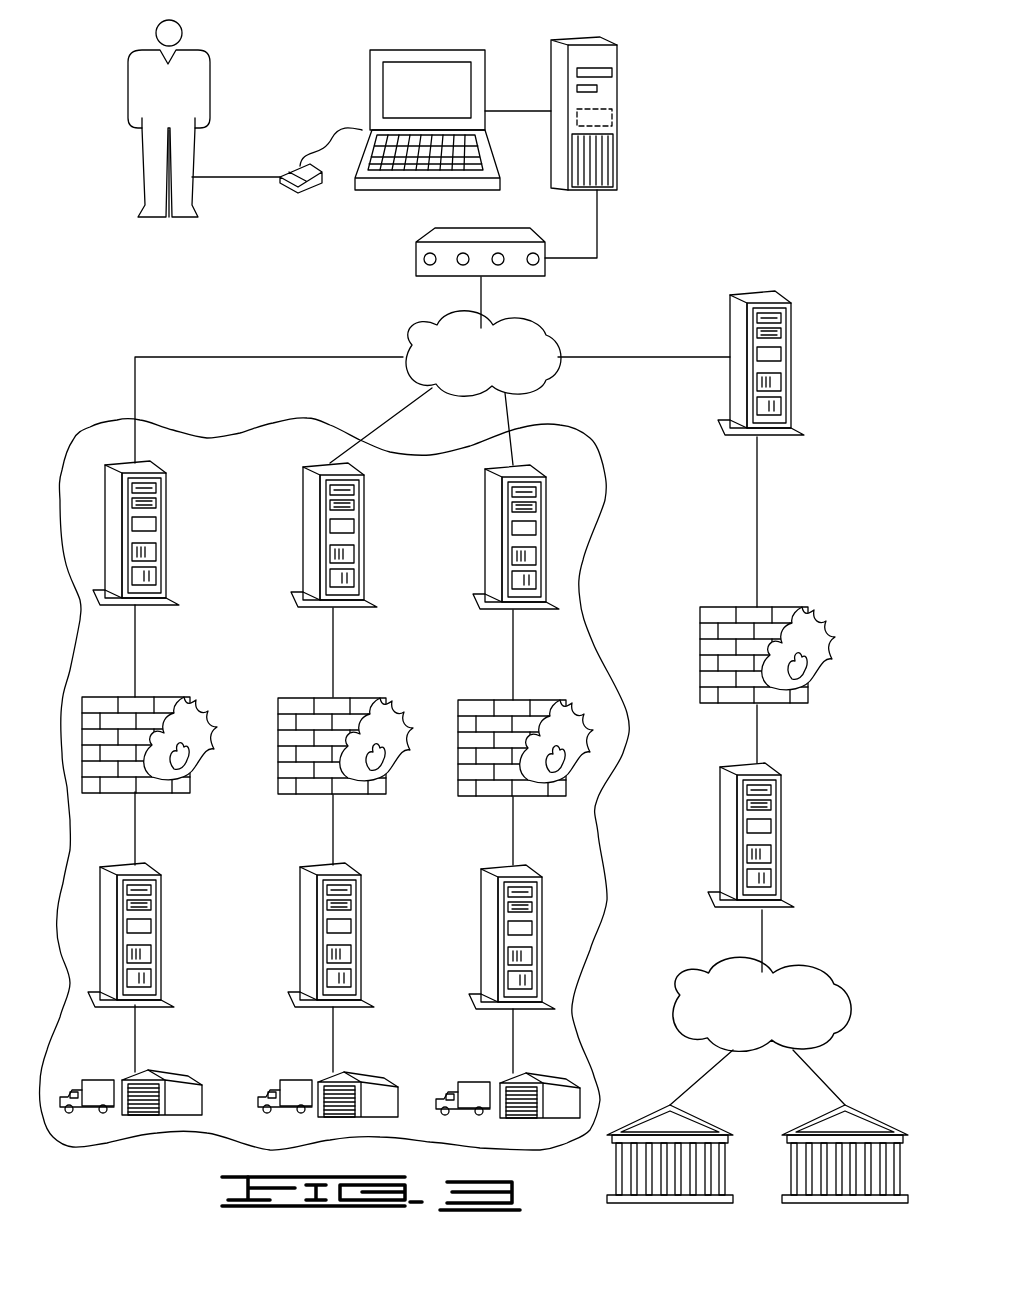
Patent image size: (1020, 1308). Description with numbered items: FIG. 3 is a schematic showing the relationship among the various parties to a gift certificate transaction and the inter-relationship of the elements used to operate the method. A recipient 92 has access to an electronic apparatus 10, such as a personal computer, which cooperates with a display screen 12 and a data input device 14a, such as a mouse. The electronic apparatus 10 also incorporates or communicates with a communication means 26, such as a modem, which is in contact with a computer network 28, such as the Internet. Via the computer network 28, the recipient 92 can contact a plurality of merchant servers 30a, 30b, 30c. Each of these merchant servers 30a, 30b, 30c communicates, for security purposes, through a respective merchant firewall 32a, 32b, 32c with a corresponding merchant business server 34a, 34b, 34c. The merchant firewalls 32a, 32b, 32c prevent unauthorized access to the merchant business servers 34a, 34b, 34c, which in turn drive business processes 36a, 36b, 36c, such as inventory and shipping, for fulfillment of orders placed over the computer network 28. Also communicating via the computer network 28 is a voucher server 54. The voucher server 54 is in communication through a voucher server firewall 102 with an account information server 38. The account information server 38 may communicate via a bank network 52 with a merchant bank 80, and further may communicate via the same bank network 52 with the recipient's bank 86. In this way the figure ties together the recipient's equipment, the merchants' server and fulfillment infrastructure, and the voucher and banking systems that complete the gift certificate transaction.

The electronic apparatus 10 is at (620, 90).
The display screen 12 is at (370, 82).
The data input device 14a is at (298, 165).
The communication means 26 is at (432, 232).
The computer network 28 is at (547, 330).
The voucher server 54 is at (795, 312).
The merchant server 30a is at (168, 560).
The merchant server 30b is at (304, 500).
The merchant server 30c is at (486, 503).
The merchant firewall 32a is at (167, 697).
The merchant firewall 32b is at (276, 722).
The merchant firewall 32c is at (480, 700).
The merchant business server 34a is at (162, 892).
The merchant business server 34b is at (301, 952).
The merchant business server 34c is at (482, 907).
The business process 36a is at (133, 1072).
The business process 36b is at (328, 1072).
The business process 36c is at (508, 1073).
The voucher server firewall 102 is at (812, 612).
The account information server 38 is at (720, 800).
The bank network 52 is at (818, 966).
The merchant bank 80 is at (645, 1112).
The recipient's bank 86 is at (870, 1112).
The recipient 92 is at (138, 50).